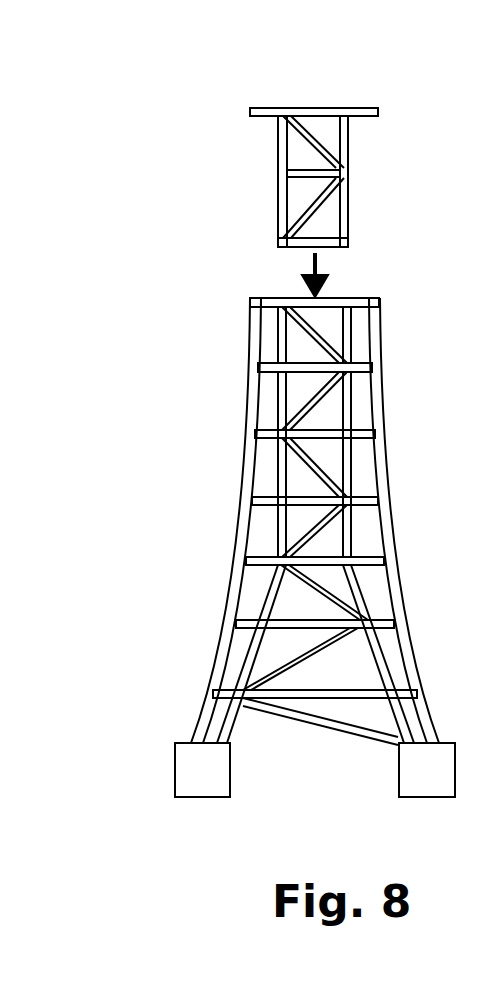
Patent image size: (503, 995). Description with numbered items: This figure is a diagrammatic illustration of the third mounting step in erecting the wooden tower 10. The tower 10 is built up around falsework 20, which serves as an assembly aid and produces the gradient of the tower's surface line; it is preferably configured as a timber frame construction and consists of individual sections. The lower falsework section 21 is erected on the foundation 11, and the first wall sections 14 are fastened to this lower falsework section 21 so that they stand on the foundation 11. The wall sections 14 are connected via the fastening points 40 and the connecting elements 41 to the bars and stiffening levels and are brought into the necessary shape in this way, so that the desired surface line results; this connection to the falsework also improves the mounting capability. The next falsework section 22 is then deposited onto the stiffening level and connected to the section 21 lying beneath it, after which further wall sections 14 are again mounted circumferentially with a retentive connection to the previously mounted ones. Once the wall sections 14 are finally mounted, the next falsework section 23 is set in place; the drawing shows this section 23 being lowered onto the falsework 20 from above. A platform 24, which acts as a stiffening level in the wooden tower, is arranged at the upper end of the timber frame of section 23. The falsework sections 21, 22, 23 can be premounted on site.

The tower 10 is at (323, 459).
The foundation 11 is at (200, 783).
The wall sections 14 is at (220, 505).
The falsework 20 is at (330, 797).
The lower falsework section 21 is at (330, 756).
The falsework section 22 is at (372, 528).
The falsework section 23 is at (350, 167).
The platform 24 is at (356, 94).
The fastening points 40 is at (250, 300).
The connecting elements 41 is at (268, 362).